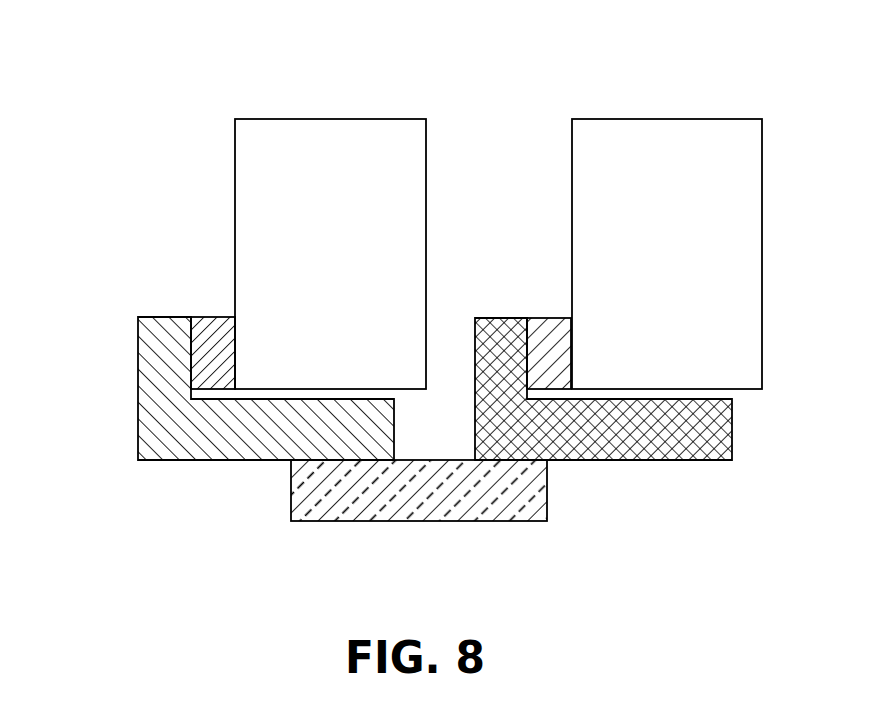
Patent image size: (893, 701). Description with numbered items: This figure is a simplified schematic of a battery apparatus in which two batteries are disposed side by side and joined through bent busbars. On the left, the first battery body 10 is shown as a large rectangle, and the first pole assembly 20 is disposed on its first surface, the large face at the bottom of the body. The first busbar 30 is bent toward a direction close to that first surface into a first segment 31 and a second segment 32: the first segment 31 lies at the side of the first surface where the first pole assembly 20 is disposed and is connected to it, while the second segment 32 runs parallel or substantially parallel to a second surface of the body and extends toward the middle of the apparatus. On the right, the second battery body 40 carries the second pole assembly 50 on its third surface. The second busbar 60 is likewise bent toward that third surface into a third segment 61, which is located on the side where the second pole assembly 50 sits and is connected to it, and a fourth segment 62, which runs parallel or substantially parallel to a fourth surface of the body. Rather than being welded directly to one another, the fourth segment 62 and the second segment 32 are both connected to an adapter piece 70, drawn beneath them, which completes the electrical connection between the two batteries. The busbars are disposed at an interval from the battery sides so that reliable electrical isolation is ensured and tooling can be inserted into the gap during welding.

The first battery body 10 is at (297, 175).
The first pole assembly 20 is at (212, 357).
The first busbar 30 is at (214, 433).
The first segment 31 is at (153, 370).
The second segment 32 is at (292, 474).
The second battery body 40 is at (685, 162).
The second pole assembly 50 is at (549, 358).
The second busbar 60 is at (603, 471).
The third segment 61 is at (502, 374).
The fourth segment 62 is at (677, 442).
The adapter piece 70 is at (432, 503).